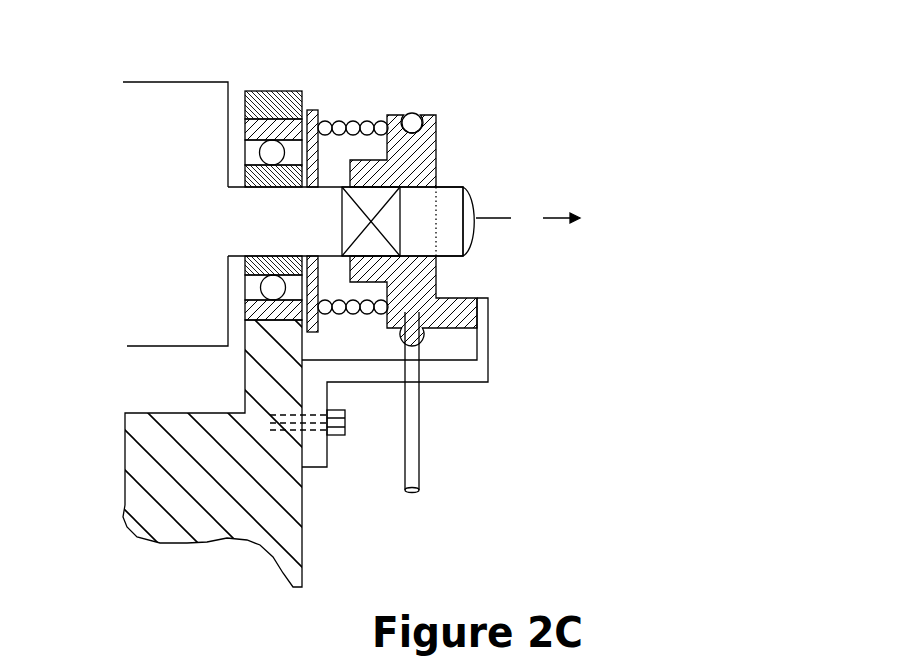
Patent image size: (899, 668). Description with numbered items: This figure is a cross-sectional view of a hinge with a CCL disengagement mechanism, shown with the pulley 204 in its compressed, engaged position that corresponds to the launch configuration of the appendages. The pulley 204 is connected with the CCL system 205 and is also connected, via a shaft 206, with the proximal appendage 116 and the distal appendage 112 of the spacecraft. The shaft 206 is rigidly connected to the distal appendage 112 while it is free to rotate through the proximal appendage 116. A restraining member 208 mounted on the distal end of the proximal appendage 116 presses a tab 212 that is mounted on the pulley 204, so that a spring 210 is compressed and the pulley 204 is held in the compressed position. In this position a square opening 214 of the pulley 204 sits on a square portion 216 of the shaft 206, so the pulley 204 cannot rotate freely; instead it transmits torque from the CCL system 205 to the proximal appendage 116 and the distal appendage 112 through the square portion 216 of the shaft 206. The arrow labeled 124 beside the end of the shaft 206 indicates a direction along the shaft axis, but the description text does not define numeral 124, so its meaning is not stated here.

The distal appendage 112 is at (187, 110).
The proximal appendage 116 is at (193, 477).
The direction of shaft movement 124 is at (528, 219).
The pulley 204 is at (437, 148).
The CCL system 205 is at (402, 112).
The shaft 206 is at (466, 198).
The restraining member 208 is at (453, 367).
The spring 210 is at (342, 121).
The tab 212 is at (458, 303).
The square opening 214 is at (437, 247).
The square portion 216 is at (372, 216).